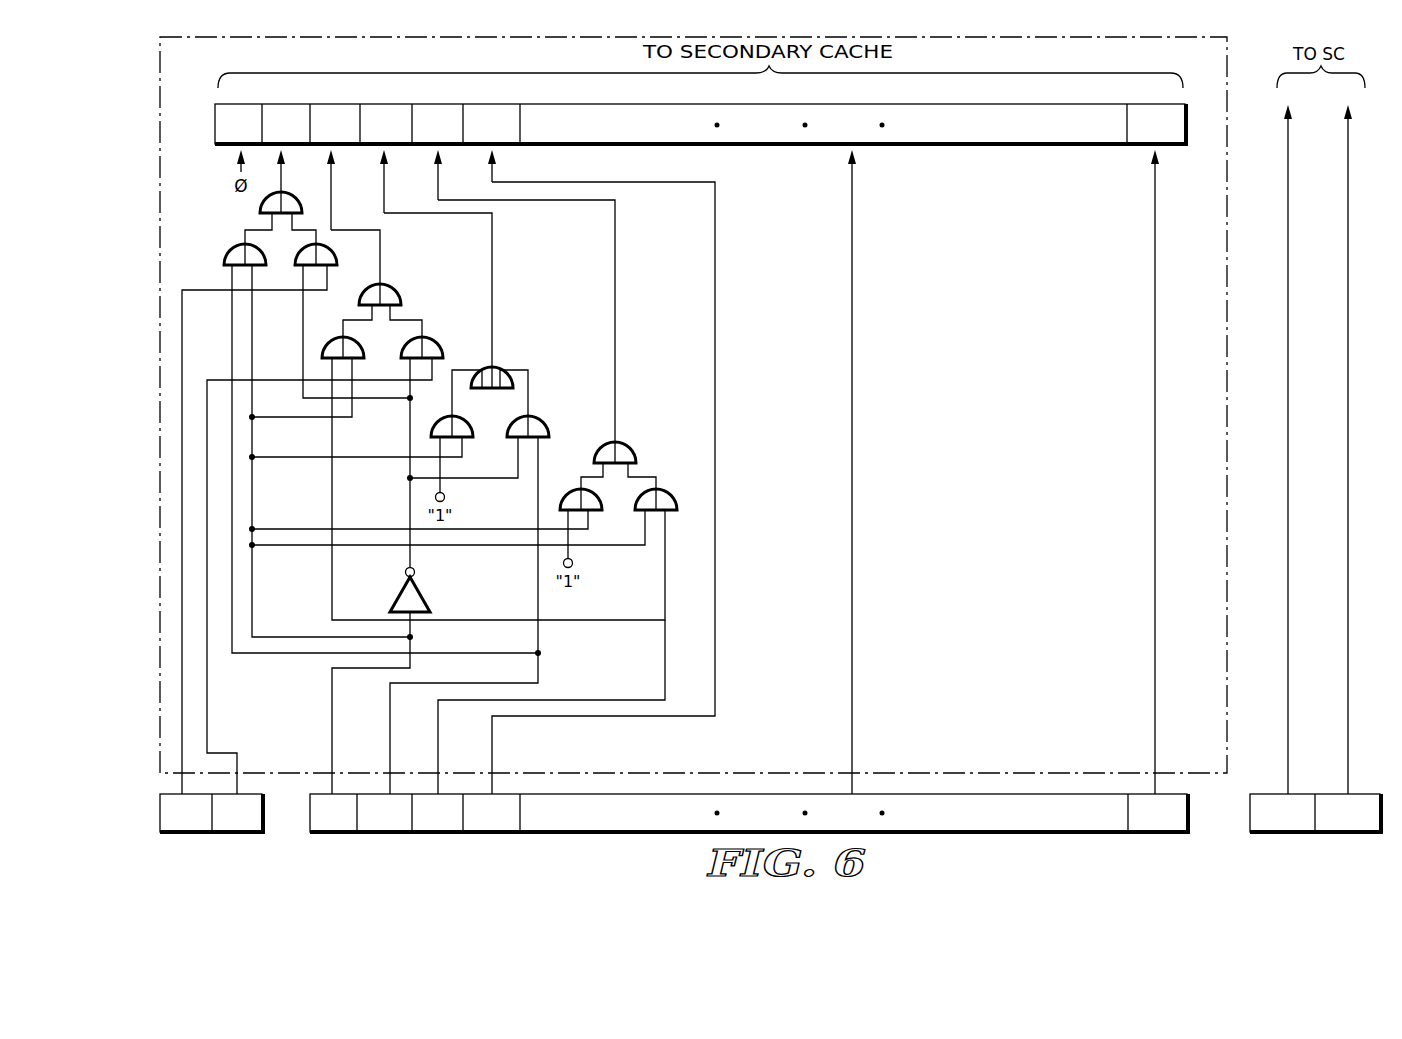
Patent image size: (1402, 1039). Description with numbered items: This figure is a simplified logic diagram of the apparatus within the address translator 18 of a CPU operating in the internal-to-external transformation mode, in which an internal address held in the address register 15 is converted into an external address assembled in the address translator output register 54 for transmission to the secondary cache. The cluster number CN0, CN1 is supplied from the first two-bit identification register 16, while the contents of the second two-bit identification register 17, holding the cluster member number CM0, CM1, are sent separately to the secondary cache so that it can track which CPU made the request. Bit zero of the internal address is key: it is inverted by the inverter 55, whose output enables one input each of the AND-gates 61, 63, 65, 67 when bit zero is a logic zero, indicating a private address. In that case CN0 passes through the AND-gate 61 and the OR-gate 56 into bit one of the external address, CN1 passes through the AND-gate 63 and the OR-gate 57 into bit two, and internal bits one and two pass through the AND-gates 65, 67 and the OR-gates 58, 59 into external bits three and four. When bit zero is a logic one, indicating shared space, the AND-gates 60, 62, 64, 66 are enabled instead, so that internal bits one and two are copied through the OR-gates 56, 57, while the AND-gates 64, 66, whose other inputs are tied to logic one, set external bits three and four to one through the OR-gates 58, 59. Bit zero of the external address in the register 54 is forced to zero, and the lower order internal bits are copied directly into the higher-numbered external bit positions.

The address register 15 is at (1078, 838).
The first two-bit identification register 16 is at (205, 838).
The second two-bit identification register 17 is at (1340, 840).
The address translator 18 is at (198, 66).
The address translator output register 54 is at (214, 141).
The inverter 55 is at (425, 598).
The OR-gate 56 is at (299, 193).
The OR-gate 57 is at (401, 298).
The OR-gate 58 is at (508, 378).
The OR-gate 59 is at (633, 452).
The AND-gate 60 is at (226, 248).
The AND-gate 61 is at (333, 248).
The AND-gate 62 is at (326, 344).
The AND-gate 63 is at (433, 340).
The AND-gate 64 is at (432, 425).
The AND-gate 65 is at (544, 418).
The AND-gate 66 is at (556, 494).
The AND-gate 67 is at (663, 486).